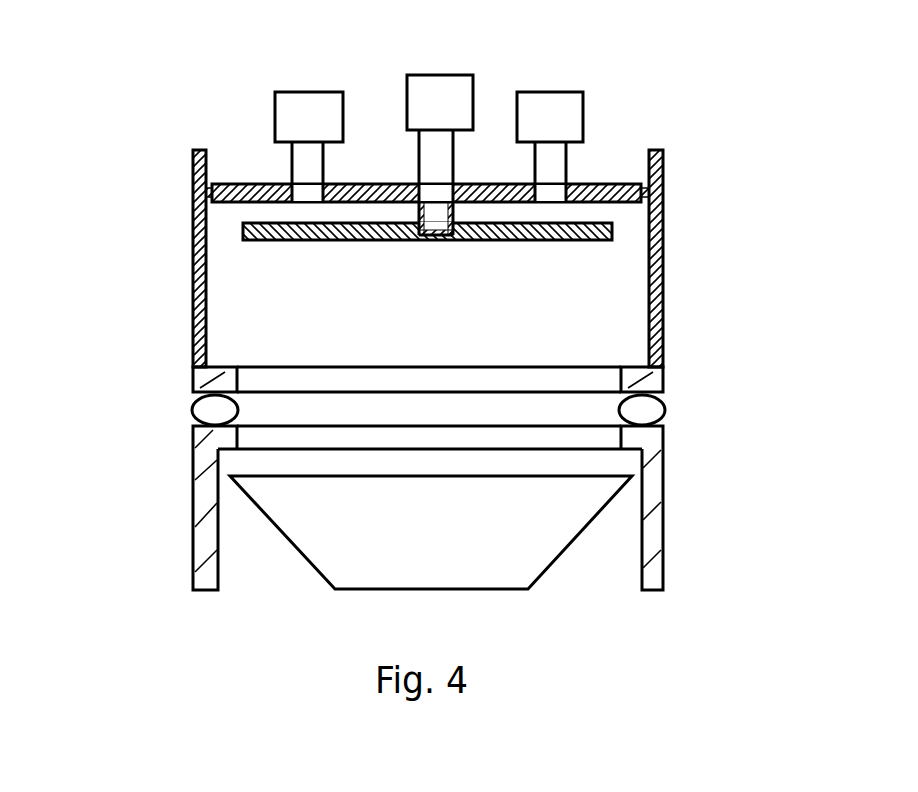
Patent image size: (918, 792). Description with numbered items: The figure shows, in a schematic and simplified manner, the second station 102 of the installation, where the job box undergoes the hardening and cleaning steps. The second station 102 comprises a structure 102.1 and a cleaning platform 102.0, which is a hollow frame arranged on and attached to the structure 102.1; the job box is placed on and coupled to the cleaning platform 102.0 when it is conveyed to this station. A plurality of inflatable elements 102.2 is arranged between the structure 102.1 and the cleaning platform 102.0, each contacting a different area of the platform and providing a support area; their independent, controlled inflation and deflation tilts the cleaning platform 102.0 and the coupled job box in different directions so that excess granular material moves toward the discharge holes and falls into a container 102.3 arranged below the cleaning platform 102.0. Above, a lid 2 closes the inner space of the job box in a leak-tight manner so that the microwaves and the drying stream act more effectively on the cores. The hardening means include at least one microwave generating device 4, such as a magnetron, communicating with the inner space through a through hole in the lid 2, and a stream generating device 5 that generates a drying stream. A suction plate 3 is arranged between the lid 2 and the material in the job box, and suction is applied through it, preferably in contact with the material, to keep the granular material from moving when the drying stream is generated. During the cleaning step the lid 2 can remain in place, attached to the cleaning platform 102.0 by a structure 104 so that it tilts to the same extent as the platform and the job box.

The second station 102 is at (108, 116).
The structure 104 is at (193, 258).
The lid 2 is at (632, 203).
The suction plate 3 is at (352, 240).
The microwave generating device 4 is at (298, 116).
The stream generating device 5 is at (458, 100).
The cleaning platform 102.0 is at (653, 387).
The structure 102.1 is at (653, 535).
The inflatable elements 102.2 is at (653, 413).
The container 102.3 is at (300, 520).